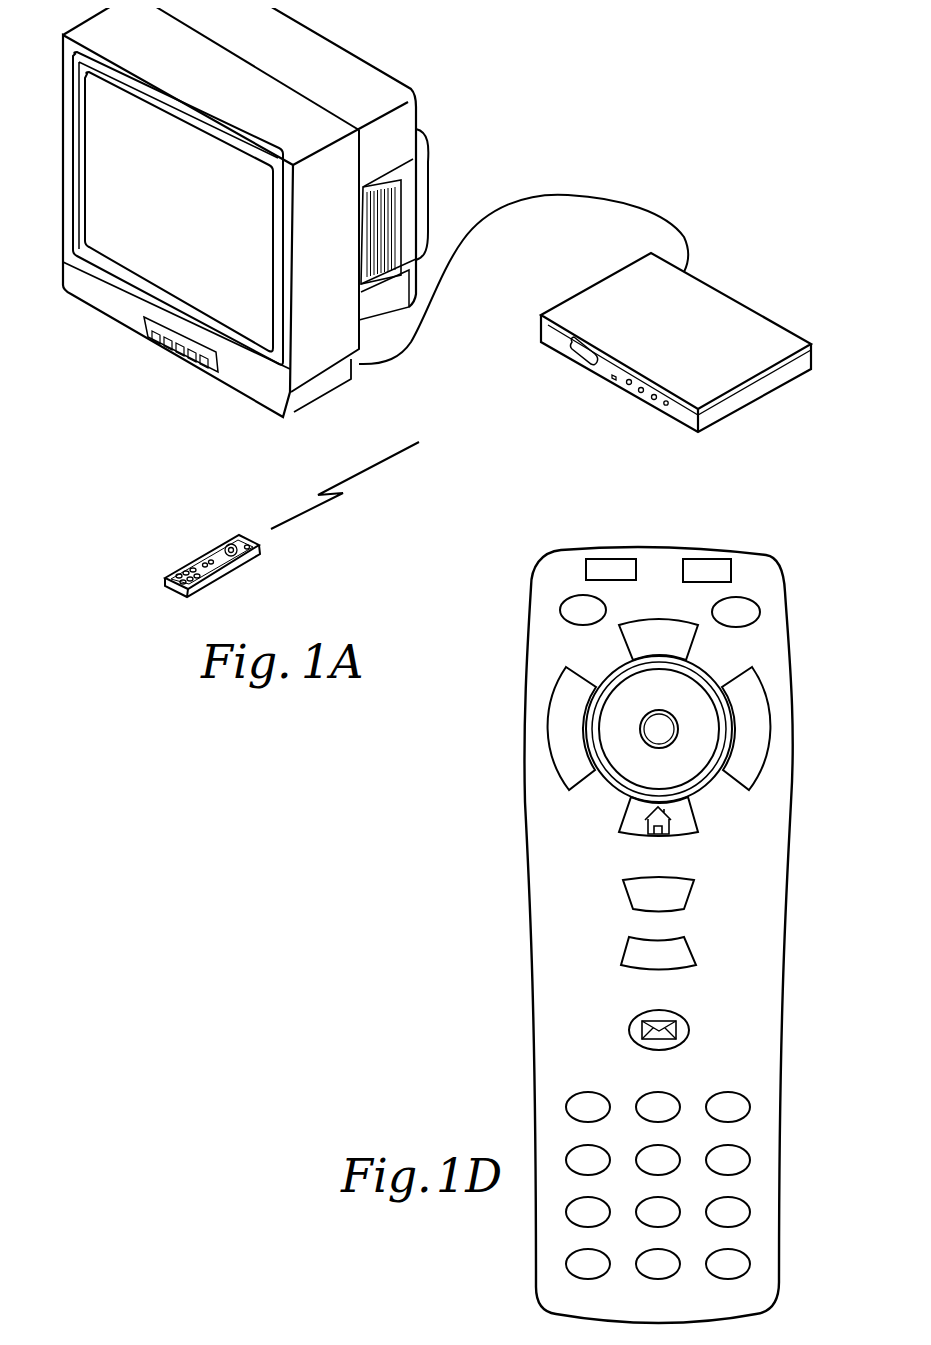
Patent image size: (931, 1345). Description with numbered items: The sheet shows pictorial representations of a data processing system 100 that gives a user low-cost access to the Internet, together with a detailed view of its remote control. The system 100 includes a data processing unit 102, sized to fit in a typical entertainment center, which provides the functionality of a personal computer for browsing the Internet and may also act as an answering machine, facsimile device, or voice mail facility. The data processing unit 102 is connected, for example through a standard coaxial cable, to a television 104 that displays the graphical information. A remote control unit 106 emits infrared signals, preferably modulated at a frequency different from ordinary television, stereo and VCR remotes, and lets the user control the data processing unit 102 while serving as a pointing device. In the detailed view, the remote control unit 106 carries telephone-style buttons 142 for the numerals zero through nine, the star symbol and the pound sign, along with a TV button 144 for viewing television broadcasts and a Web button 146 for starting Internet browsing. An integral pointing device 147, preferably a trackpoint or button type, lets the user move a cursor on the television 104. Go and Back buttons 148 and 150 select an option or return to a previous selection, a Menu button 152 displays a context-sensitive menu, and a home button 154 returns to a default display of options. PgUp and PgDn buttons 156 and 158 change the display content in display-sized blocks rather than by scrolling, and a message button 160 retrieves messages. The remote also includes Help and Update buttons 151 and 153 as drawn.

In FIG. 1A, the data processing system 100 is at (541, 452).
In FIG. 1A, the data processing unit 102 is at (746, 306).
In FIG. 1A, the television 104 is at (392, 74).
In FIG. 1A, the remote control unit 106 is at (188, 560).
In FIG. 1D, the remote control unit 106 is at (780, 1057).
In FIG. 1D, the buttons 142 is at (787, 1080).
In FIG. 1D, the TV button 144 is at (607, 557).
In FIG. 1D, the Web button 146 is at (707, 557).
In FIG. 1D, the integral pointing device 147 is at (672, 724).
In FIG. 1D, the Go button 148 is at (748, 790).
In FIG. 1D, the Back button 150 is at (568, 788).
In FIG. 1D, the Help button 151 is at (557, 610).
In FIG. 1D, the Menu button 152 is at (667, 593).
In FIG. 1D, the Update button 153 is at (759, 613).
In FIG. 1D, the home button 154 is at (688, 832).
In FIG. 1D, the PgUp button 156 is at (690, 893).
In FIG. 1D, the PgDn button 158 is at (677, 966).
In FIG. 1D, the message button 160 is at (686, 1030).